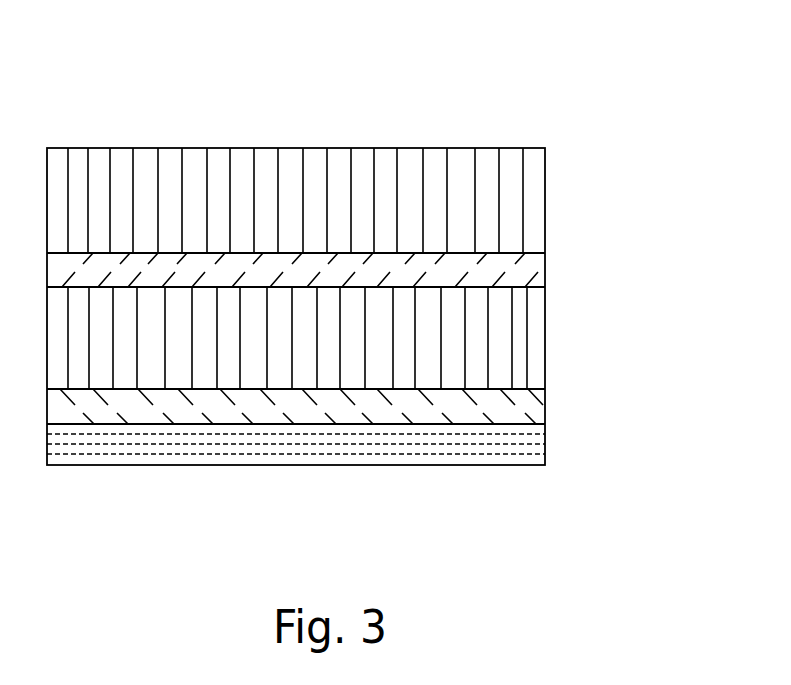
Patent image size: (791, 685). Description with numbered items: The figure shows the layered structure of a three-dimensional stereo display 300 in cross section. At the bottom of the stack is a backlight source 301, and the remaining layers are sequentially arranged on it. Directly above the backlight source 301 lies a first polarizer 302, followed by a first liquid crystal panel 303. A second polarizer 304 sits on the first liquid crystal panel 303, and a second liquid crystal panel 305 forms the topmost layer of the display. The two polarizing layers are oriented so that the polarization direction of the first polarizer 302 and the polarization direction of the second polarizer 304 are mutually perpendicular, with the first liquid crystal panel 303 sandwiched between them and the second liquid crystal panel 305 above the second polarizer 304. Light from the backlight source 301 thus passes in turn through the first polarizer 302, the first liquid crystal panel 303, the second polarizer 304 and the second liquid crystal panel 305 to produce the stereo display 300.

The 3D stereo display 300 is at (590, 63).
The backlight source 301 is at (537, 447).
The first polarizer 302 is at (533, 405).
The first liquid crystal panel 303 is at (537, 338).
The second polarizer 304 is at (537, 273).
The second liquid crystal panel 305 is at (533, 200).